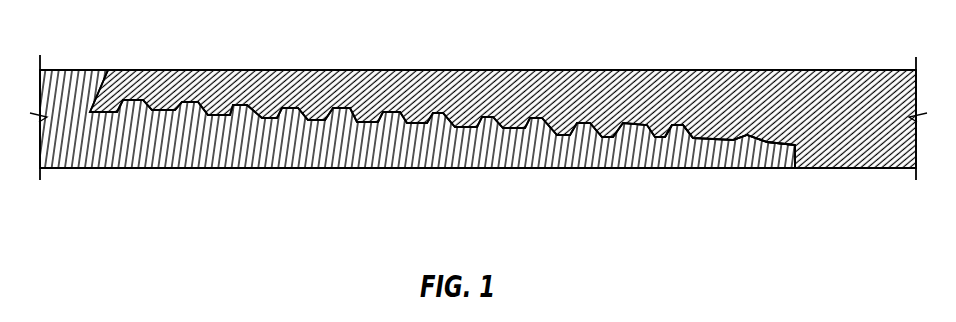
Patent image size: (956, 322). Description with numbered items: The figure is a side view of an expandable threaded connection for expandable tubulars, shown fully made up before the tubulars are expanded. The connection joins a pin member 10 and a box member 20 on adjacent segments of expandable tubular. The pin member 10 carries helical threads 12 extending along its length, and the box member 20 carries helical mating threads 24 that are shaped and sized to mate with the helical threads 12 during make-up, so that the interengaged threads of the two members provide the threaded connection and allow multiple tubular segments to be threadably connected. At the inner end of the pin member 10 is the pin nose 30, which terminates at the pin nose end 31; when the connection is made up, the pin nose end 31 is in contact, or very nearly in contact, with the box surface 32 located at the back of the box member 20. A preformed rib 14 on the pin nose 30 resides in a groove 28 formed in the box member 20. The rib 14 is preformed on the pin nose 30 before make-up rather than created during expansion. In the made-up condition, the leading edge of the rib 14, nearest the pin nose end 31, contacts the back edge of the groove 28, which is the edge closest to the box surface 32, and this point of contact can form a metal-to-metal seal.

The pin member 10 is at (155, 163).
The helical threads 12 is at (662, 166).
The preformed rib 14 is at (727, 167).
The box member 20 is at (842, 77).
The helical mating threads 24 is at (677, 130).
The groove 28 is at (747, 137).
The pin nose 30 is at (778, 147).
The pin nose end 31 is at (780, 152).
The box surface 32 is at (798, 148).